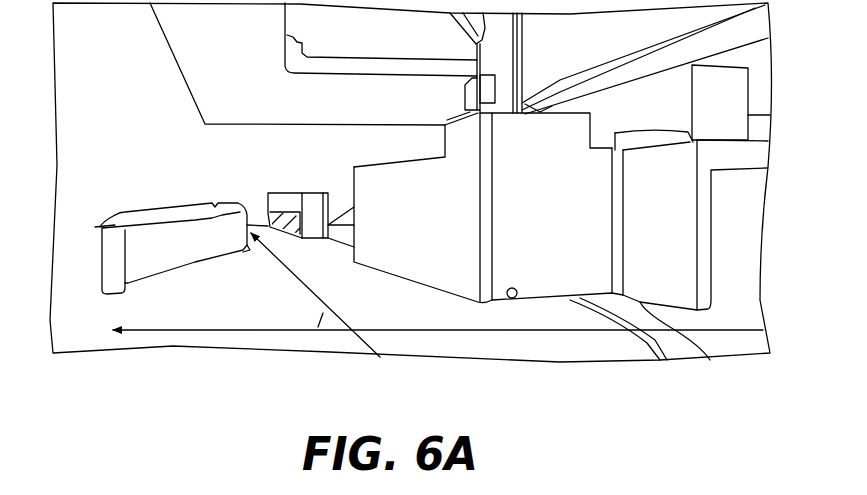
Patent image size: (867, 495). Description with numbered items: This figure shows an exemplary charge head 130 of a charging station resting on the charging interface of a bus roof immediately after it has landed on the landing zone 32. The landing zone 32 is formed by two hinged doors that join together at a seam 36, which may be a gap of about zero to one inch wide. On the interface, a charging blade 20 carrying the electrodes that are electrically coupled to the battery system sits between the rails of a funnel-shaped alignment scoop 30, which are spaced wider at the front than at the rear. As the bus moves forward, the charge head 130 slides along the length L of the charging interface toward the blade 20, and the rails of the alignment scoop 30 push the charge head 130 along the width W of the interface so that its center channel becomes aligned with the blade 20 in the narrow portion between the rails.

The charging blade 20 is at (280, 198).
The alignment scoop 30 is at (165, 257).
The landing zone 32 is at (318, 327).
The seam 36 is at (663, 362).
The charge head 130 is at (710, 360).
The length L is at (273, 257).
The width W is at (453, 330).